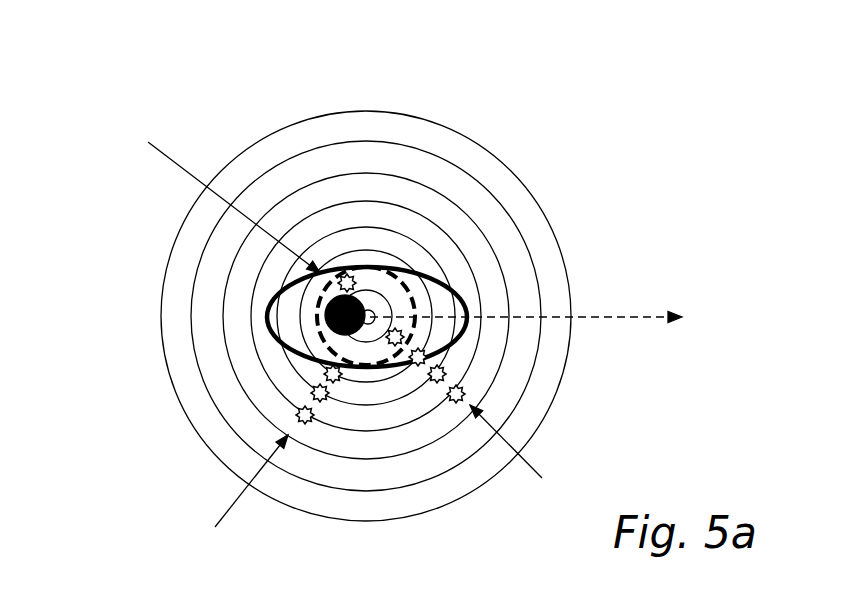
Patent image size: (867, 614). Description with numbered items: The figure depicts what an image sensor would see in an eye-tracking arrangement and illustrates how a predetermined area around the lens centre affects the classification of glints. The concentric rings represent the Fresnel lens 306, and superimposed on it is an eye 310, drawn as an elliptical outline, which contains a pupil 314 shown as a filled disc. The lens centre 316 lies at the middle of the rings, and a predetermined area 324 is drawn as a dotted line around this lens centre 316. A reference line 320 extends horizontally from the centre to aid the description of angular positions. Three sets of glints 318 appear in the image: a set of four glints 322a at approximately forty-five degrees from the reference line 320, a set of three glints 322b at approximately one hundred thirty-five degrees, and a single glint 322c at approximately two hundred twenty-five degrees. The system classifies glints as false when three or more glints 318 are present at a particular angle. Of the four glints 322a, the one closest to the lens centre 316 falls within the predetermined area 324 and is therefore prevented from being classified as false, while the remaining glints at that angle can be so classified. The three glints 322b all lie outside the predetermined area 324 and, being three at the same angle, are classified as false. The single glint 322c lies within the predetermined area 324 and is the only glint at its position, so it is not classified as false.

The Fresnel lens 306 is at (500, 160).
The eye 310 is at (413, 282).
The pupil 314 is at (328, 314).
The lens centre 316 is at (370, 311).
The glints 318 is at (343, 278).
The reference line 320 is at (632, 317).
The set of four glints 322a is at (528, 455).
The set of three glints 322b is at (236, 494).
The single glint 322c is at (211, 198).
The predetermined area 324 is at (322, 333).